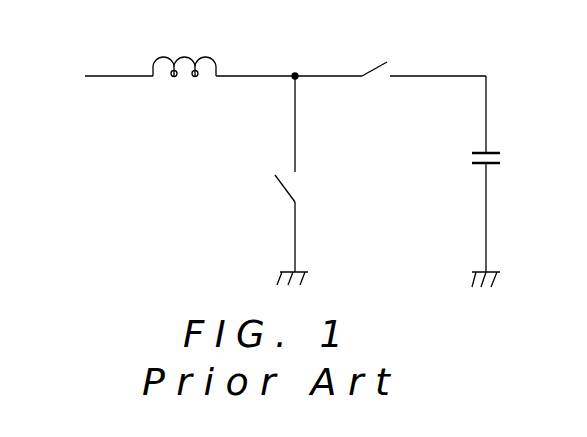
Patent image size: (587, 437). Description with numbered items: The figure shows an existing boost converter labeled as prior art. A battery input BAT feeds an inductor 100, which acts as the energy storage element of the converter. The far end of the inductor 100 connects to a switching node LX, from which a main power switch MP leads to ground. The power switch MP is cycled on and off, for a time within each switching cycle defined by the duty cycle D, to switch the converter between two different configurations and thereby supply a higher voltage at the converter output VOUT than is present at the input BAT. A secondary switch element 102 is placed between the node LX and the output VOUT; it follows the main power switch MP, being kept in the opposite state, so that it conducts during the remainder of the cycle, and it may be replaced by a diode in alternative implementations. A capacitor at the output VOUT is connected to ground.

The inductor 100 is at (183, 53).
The secondary switch element 102 is at (368, 62).
The input BAT is at (99, 74).
The switching node LX is at (289, 62).
The converter output VOUT is at (493, 165).
The power switch MP is at (294, 180).